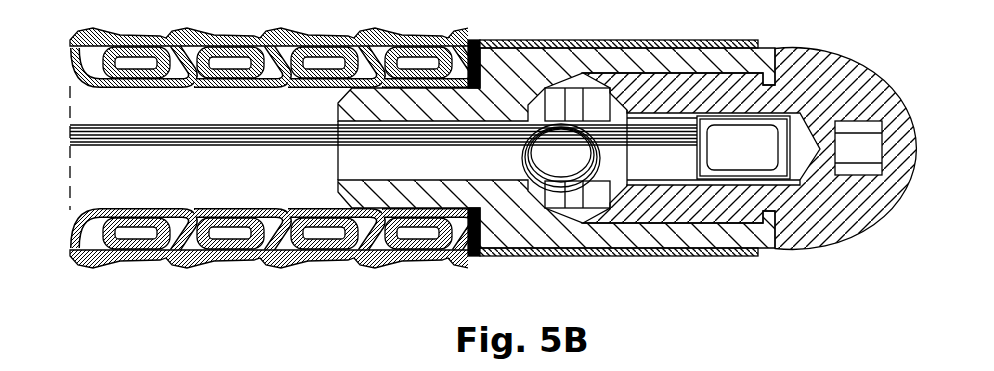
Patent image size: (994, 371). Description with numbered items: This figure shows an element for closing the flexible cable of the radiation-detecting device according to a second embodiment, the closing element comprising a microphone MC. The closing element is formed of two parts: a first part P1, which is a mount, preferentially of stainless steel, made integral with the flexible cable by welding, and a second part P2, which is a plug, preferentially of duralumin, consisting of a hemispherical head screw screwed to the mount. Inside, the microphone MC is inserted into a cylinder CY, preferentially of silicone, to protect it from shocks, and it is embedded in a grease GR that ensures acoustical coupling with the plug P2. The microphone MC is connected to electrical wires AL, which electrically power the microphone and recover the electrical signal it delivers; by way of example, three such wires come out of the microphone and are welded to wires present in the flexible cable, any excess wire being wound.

The electrical wires AL is at (107, 140).
The first part (mount) P1 is at (518, 218).
The second part (plug) P2 is at (818, 83).
The grease GR is at (660, 118).
The cylinder CY is at (683, 183).
The microphone MC is at (747, 142).